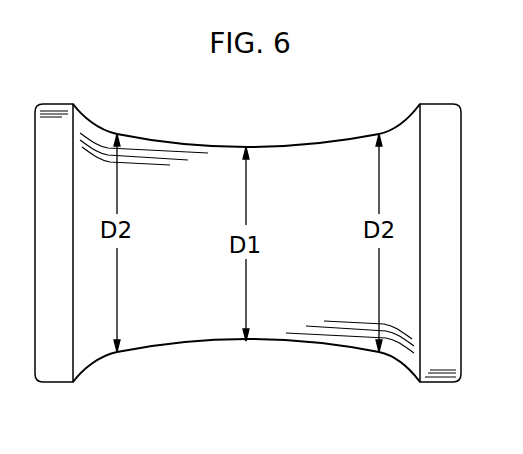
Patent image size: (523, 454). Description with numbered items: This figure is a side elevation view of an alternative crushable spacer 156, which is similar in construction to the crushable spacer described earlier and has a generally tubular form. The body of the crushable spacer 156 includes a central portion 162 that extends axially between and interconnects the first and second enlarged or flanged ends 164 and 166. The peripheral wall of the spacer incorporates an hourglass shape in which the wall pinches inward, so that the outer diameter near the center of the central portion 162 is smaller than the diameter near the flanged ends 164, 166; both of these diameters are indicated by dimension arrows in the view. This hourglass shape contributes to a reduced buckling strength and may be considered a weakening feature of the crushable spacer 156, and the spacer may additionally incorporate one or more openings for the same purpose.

The crushable spacer 156 is at (251, 255).
The central portion 162 is at (172, 340).
The first flanged end 164 is at (55, 373).
The second flanged end 166 is at (435, 380).